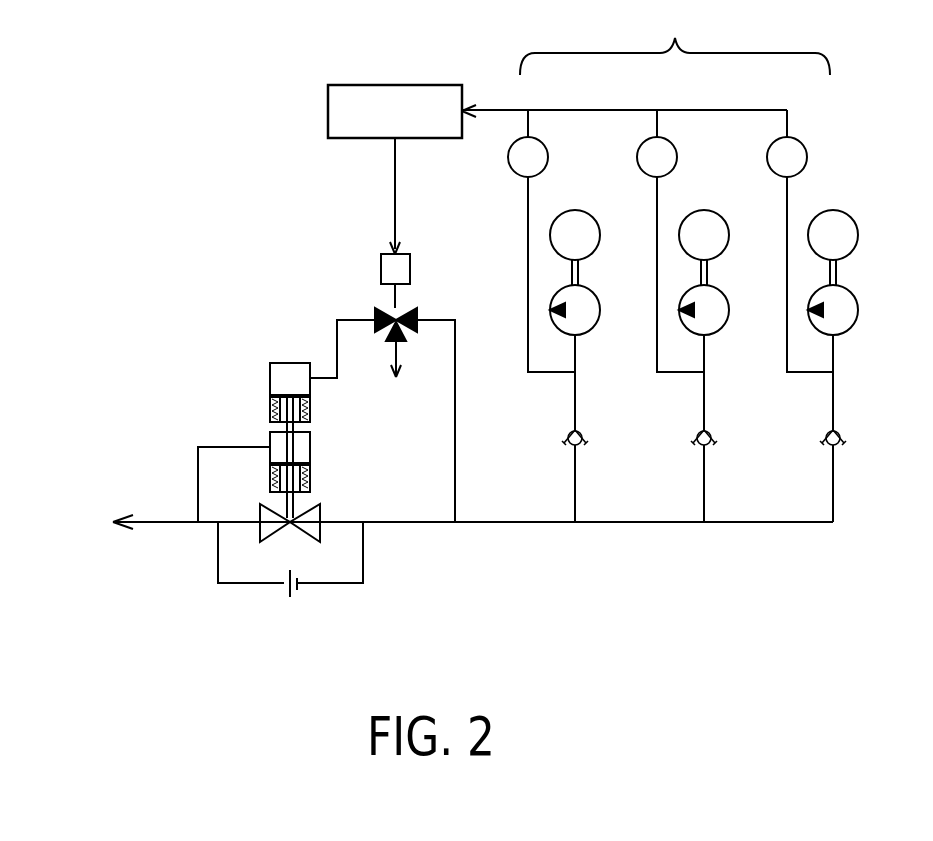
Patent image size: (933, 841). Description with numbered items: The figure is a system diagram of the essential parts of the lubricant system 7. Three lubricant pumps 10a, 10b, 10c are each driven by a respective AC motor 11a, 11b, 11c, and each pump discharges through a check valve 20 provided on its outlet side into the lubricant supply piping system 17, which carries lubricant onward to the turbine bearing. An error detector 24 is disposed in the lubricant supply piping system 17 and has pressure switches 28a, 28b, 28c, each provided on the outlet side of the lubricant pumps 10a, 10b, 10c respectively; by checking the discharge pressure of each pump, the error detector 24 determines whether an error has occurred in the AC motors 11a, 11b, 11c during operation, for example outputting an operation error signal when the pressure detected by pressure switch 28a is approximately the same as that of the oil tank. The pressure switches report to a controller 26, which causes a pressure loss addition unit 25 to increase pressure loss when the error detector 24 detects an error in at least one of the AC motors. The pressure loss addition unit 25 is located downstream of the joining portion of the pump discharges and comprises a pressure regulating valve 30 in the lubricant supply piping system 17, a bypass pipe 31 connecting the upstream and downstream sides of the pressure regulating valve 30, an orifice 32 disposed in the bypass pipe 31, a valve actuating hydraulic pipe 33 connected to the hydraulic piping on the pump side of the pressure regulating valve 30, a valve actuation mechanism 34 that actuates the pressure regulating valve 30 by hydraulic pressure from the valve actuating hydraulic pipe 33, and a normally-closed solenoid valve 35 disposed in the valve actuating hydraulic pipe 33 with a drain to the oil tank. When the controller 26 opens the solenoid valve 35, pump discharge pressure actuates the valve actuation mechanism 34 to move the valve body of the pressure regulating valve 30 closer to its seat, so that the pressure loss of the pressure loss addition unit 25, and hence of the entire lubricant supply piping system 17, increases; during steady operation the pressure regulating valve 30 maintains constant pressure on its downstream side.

The lubricant system 7 is at (666, 535).
The lubricant pump 10a is at (599, 307).
The lubricant pump 10b is at (728, 307).
The lubricant pump 10c is at (857, 307).
The AC motor 11a is at (599, 232).
The AC motor 11b is at (728, 232).
The AC motor 11c is at (857, 232).
The lubricant supply piping system 17 is at (162, 521).
The check valve 20 is at (586, 437).
The error detector 24 is at (688, 33).
The pressure loss addition unit 25 is at (286, 428).
The controller 26 is at (328, 112).
The pressure switch 28a is at (543, 141).
The pressure switch 28b is at (672, 141).
The pressure switch 28c is at (801, 141).
The pressure regulating valve 30 is at (310, 447).
The bypass pipe 31 is at (363, 552).
The orifice 32 is at (283, 600).
The valve actuating hydraulic pipe 33 is at (455, 445).
The valve actuation mechanism 34 is at (270, 378).
The solenoid valve 35 is at (375, 315).